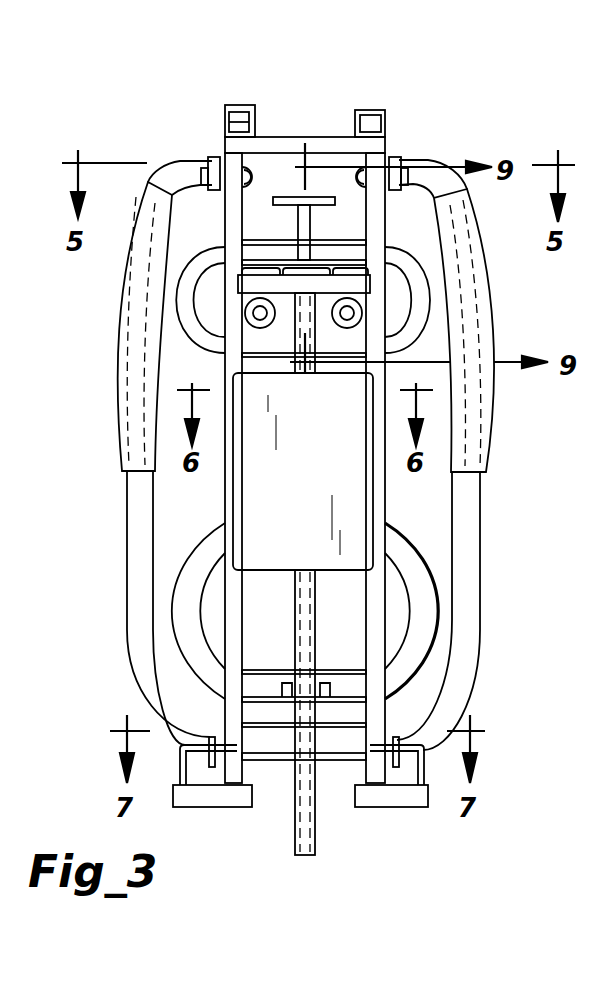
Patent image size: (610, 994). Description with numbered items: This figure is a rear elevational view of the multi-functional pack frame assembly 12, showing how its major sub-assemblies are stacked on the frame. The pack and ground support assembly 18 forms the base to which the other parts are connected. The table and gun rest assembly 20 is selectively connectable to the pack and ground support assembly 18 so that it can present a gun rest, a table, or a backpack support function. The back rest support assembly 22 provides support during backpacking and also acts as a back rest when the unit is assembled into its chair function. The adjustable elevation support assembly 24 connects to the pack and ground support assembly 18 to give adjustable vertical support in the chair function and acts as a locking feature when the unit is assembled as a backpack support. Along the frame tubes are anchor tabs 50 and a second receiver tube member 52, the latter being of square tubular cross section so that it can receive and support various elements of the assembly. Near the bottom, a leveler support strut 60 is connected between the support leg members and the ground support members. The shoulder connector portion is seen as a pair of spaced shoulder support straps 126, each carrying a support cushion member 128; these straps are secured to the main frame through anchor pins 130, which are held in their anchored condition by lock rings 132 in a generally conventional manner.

The multi-functional pack frame assembly 12 is at (548, 324).
The pack and ground support assembly 18 is at (446, 556).
The table and gun rest assembly 20 is at (336, 622).
The back rest support assembly 22 is at (440, 281).
The adjustable elevation support assembly 24 is at (288, 224).
The anchor tabs 50 is at (240, 105).
The second receiver tube member 52 is at (370, 110).
The leveler support strut 60 is at (187, 770).
The shoulder support straps 126 is at (128, 575).
The support cushion member 128 is at (122, 327).
The anchor pins 130 is at (211, 160).
The lock rings 132 is at (252, 170).